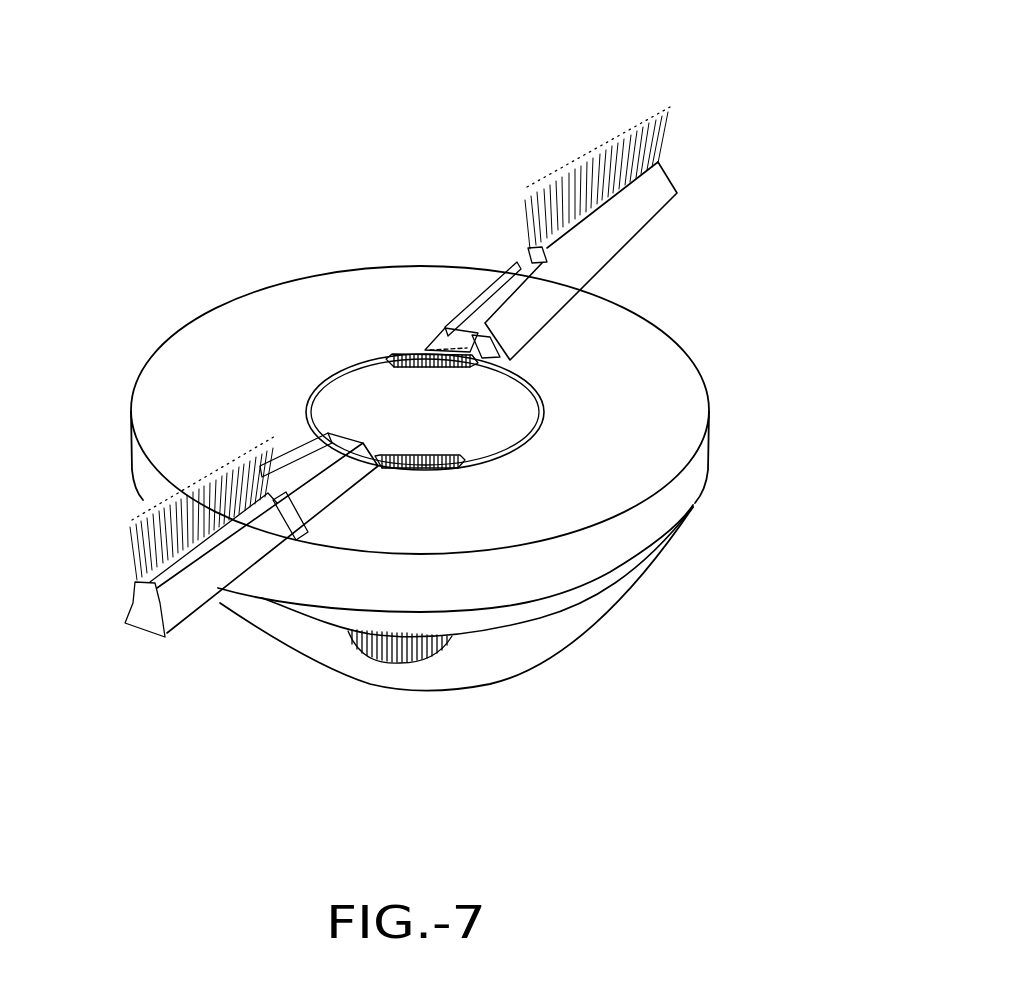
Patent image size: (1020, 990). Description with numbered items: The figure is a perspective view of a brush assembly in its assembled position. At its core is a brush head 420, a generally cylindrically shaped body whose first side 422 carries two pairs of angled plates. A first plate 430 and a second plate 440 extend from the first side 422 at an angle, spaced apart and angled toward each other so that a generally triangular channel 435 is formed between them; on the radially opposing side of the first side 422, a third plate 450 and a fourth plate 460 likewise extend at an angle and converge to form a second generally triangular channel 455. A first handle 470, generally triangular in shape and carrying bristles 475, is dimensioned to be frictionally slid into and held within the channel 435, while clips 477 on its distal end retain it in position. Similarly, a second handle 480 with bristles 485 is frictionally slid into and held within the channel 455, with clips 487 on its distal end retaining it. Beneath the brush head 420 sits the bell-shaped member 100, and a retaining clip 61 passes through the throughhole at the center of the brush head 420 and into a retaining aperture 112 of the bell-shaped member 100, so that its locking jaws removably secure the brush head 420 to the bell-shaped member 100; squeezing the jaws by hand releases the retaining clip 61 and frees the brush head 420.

The retaining clip 61 is at (500, 430).
The bell-shaped member 100 is at (473, 668).
The retaining aperture 112 is at (398, 653).
The brush head 420 is at (657, 447).
The first side 422 is at (645, 385).
The first plate 430 is at (545, 307).
The channel 435 is at (427, 350).
The second plate 440 is at (492, 307).
The third plate 450 is at (333, 496).
The channel 455 is at (292, 477).
The fourth plate 460 is at (300, 447).
The first handle 470 is at (653, 200).
The bristles 475 is at (627, 120).
The clips 477 is at (433, 362).
The second handle 480 is at (185, 603).
The bristles 485 is at (235, 487).
The clips 487 is at (355, 446).